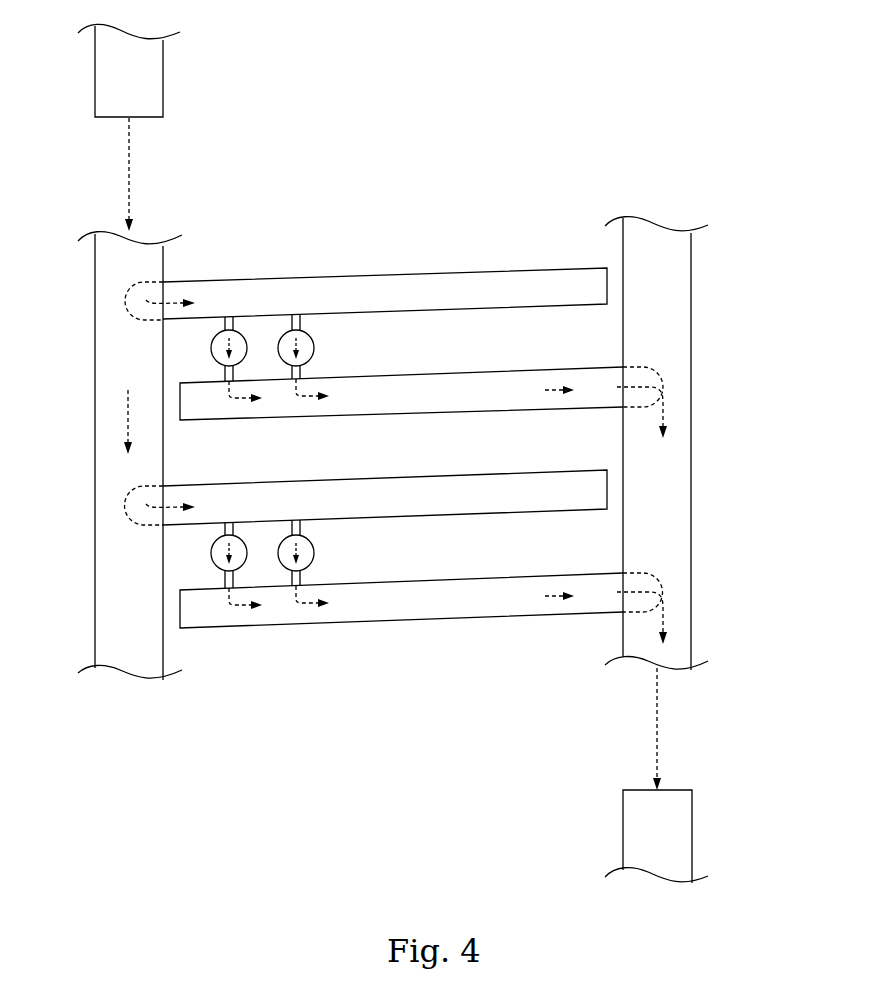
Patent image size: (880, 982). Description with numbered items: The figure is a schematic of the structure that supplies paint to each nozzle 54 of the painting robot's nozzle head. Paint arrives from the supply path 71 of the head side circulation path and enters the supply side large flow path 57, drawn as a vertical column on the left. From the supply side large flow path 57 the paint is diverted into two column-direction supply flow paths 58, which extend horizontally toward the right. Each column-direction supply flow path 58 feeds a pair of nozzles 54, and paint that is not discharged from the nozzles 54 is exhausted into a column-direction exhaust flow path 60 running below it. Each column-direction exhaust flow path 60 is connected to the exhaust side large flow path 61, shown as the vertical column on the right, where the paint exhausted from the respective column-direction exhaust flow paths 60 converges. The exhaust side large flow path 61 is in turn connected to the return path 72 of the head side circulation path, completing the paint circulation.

The nozzle 54 is at (237, 330).
The supply side large flow path 57 is at (110, 548).
The column-direction supply flow path 58 is at (437, 285).
The column-direction exhaust flow path 60 is at (525, 385).
The exhaust side large flow path 61 is at (683, 465).
The supply path 71 is at (150, 76).
The return path 72 is at (670, 830).